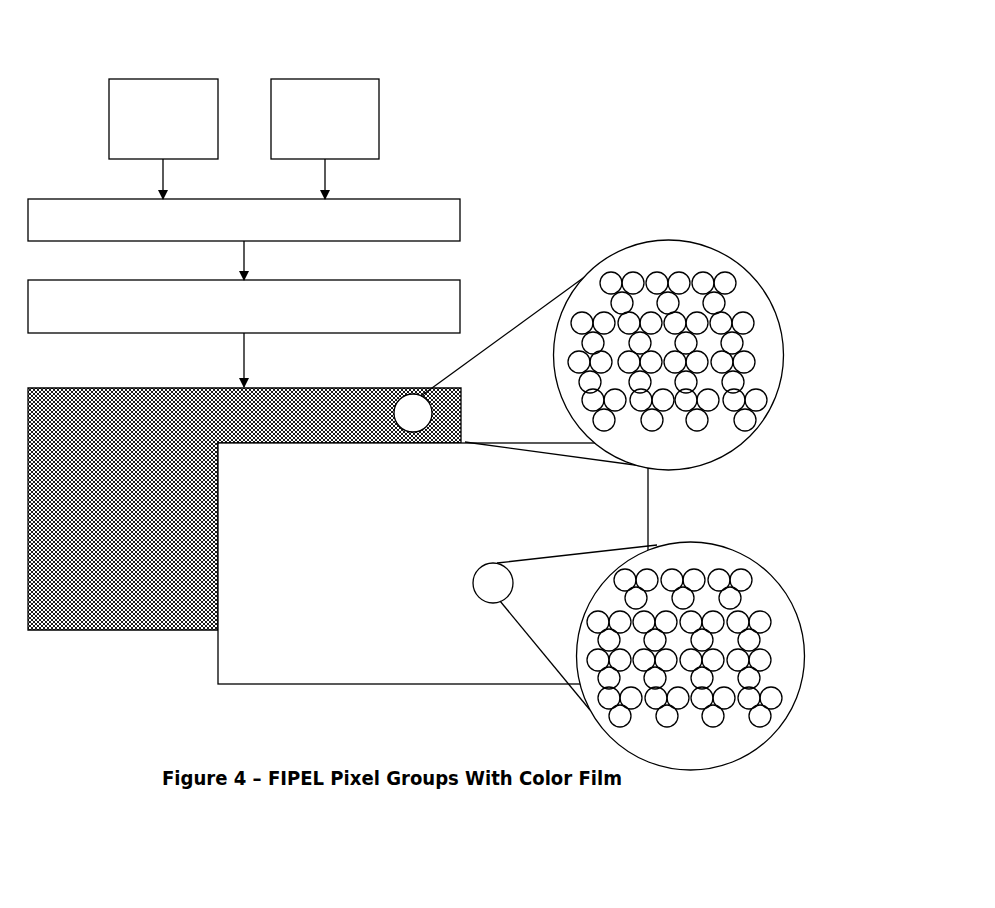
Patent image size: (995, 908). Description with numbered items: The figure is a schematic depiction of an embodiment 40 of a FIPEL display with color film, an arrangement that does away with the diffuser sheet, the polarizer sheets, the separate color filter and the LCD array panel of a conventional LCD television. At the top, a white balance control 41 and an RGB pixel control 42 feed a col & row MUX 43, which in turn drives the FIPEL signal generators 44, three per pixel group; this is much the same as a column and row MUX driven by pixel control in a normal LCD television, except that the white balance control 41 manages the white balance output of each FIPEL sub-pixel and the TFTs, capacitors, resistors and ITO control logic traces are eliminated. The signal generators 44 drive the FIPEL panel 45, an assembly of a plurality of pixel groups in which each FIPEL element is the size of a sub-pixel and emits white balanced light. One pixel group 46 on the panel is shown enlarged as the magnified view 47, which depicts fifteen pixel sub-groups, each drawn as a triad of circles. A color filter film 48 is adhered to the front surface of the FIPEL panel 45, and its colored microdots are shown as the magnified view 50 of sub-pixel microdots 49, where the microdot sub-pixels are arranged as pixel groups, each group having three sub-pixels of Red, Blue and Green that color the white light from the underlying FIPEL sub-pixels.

The embodiment 40 is at (515, 50).
The white balance control 41 is at (109, 118).
The RGB pixel control 42 is at (381, 118).
The col & row MUX 43 is at (462, 219).
The FIPEL signal generators 44 is at (462, 307).
The FIPEL panel 45 is at (95, 385).
The pixel group 46 is at (410, 390).
The magnified view of pixel groups 47 is at (670, 239).
The color filter film 48 is at (270, 686).
The sub-pixel microdots 49 is at (495, 562).
The magnified view of colored microdots 50 is at (690, 542).